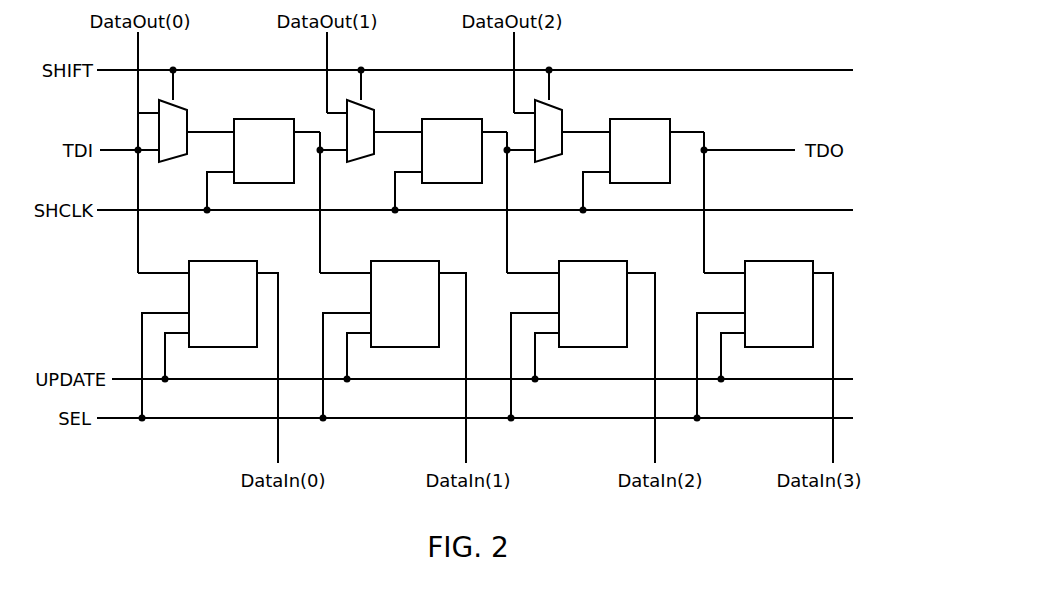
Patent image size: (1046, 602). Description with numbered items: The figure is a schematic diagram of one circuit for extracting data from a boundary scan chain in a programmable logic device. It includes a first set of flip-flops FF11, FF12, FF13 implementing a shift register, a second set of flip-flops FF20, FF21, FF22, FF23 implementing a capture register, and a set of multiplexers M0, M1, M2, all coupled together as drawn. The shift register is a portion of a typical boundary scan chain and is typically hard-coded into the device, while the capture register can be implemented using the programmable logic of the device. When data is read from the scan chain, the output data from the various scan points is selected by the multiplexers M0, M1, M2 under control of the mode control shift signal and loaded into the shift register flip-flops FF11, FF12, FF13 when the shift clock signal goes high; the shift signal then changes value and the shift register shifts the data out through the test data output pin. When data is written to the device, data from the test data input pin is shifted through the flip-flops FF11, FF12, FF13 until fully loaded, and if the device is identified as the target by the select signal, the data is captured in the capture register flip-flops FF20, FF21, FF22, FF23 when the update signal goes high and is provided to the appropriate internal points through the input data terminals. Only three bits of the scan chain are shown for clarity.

The flip-flop FF11 is at (250, 119).
The flip-flop FF12 is at (438, 119).
The flip-flop FF13 is at (626, 119).
The flip-flop FF20 is at (200, 261).
The flip-flop FF21 is at (382, 261).
The flip-flop FF22 is at (570, 261).
The flip-flop FF23 is at (756, 261).
The multiplexer M0 is at (177, 162).
The multiplexer M1 is at (365, 162).
The multiplexer M2 is at (553, 162).